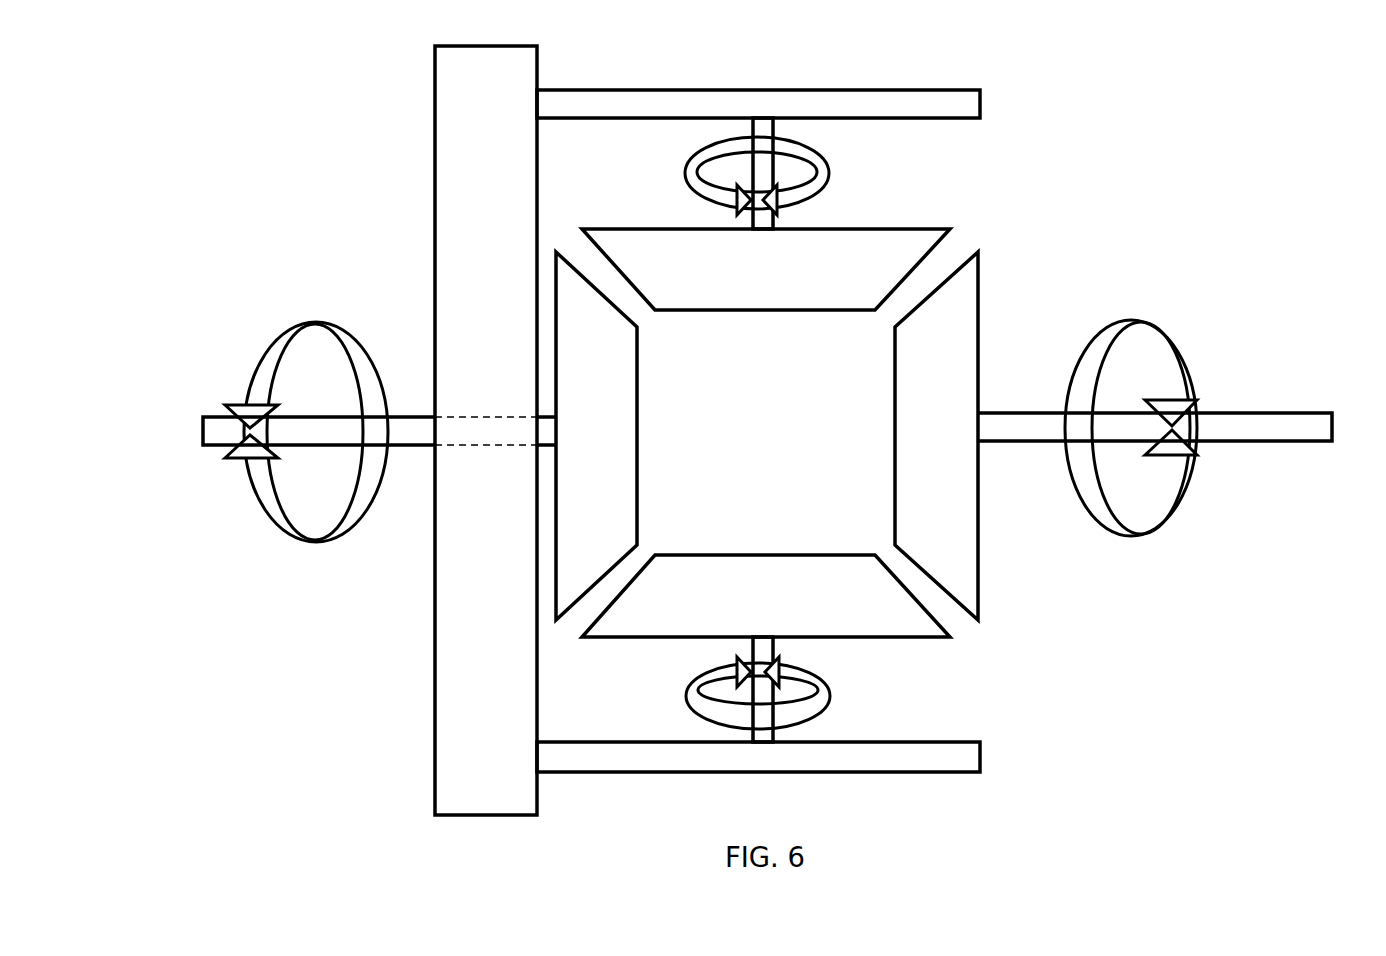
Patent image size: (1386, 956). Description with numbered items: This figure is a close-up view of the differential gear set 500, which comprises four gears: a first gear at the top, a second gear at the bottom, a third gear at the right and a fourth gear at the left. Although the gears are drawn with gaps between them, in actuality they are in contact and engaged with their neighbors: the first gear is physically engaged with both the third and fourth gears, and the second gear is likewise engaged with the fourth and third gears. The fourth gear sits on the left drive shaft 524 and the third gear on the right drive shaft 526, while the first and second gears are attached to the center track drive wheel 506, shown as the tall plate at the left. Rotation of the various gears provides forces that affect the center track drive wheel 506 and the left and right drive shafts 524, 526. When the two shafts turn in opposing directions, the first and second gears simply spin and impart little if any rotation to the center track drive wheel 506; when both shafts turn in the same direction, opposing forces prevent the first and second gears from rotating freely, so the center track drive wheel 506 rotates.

The differential gear set 500 is at (988, 205).
The center track drive wheel 506 is at (447, 177).
The left drive shaft 524 is at (203, 420).
The right drive shaft 526 is at (1265, 441).